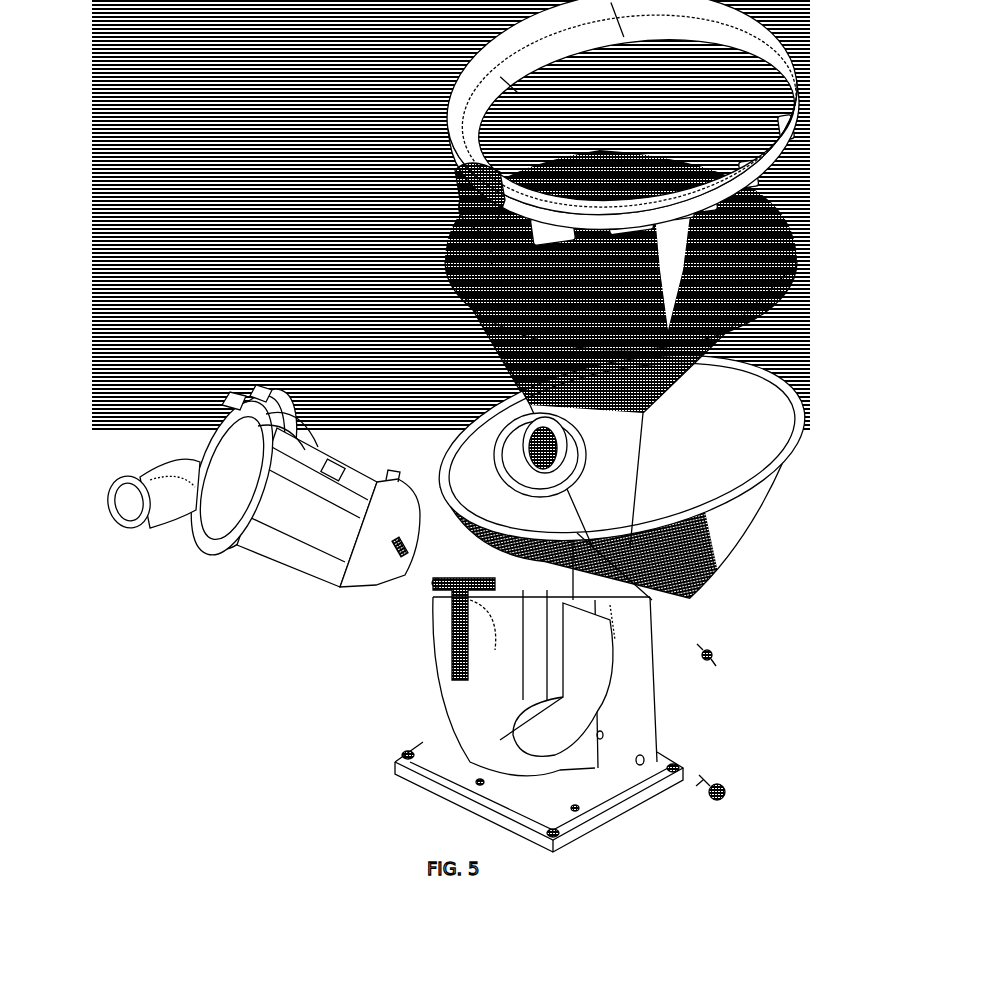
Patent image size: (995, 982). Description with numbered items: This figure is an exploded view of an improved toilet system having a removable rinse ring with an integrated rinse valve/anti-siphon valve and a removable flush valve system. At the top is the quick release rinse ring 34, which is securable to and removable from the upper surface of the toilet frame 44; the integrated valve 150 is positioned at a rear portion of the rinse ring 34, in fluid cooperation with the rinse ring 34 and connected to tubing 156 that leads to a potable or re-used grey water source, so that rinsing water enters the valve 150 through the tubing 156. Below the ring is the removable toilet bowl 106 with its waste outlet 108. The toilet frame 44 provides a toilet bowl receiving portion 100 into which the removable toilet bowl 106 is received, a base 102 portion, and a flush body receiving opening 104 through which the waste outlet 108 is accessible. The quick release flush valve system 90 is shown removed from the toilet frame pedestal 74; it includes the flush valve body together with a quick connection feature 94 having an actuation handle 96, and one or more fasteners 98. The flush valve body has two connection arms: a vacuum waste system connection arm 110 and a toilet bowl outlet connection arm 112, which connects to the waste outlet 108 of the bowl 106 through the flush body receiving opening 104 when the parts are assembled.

The quick release rinse ring 34 is at (762, 66).
The integrated valve 150 is at (398, 151).
The removable toilet bowl 106 is at (717, 284).
The toilet bowl receiving portion 100 is at (688, 430).
The actuation handle 96 is at (510, 423).
The waste outlet 108 is at (548, 449).
The quick connection feature 94 is at (577, 422).
The toilet frame 44 is at (714, 535).
The quick release flush valve system 90 is at (116, 441).
The vacuum waste system connection arm 110 is at (180, 495).
The toilet bowl outlet connection arm 112 is at (285, 547).
The tubing 156 is at (457, 622).
The flush body receiving opening 104 is at (512, 697).
The toilet frame pedestal 74 is at (630, 741).
The base 102 is at (538, 800).
The fasteners 98 is at (723, 778).